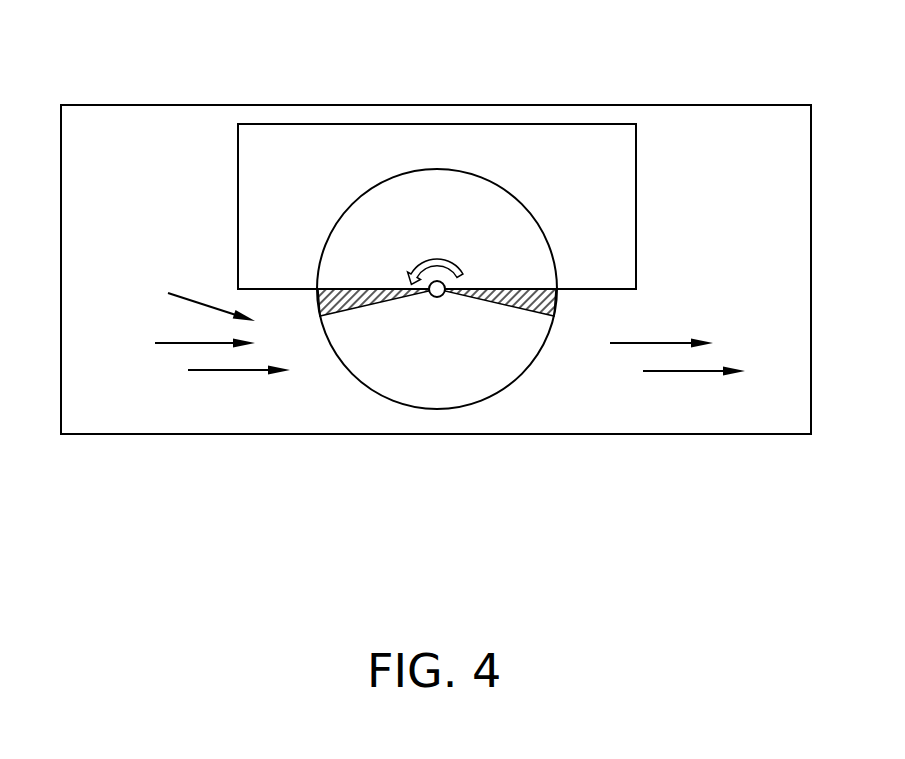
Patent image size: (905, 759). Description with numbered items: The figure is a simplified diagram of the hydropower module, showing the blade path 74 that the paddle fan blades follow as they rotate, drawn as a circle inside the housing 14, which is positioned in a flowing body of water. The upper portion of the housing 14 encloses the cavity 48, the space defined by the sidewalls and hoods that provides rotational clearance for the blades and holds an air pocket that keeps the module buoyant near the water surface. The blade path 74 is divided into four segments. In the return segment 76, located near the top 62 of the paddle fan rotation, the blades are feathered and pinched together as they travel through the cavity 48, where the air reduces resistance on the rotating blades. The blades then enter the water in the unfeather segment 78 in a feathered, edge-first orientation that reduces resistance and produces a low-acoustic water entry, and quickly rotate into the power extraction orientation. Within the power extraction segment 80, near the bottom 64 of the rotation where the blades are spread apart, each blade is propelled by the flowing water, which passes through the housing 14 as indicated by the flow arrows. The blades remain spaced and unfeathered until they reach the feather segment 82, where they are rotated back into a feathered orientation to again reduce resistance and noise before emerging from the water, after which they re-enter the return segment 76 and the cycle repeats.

The housing 14 is at (262, 130).
The cavity 48 is at (355, 215).
The top 62 is at (426, 147).
The bottom 64 is at (438, 431).
The blade path 74 is at (551, 370).
The return segment 76 is at (496, 208).
The unfeather segment 78 is at (322, 297).
The power extraction segment 80 is at (392, 363).
The feather segment 82 is at (548, 301).